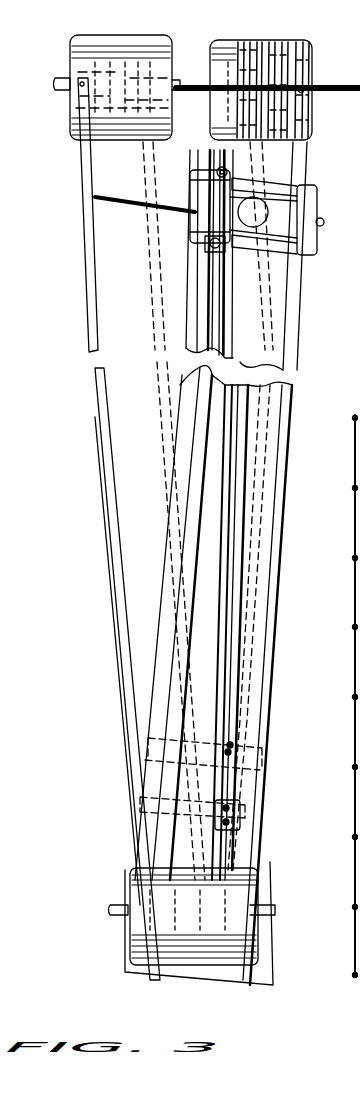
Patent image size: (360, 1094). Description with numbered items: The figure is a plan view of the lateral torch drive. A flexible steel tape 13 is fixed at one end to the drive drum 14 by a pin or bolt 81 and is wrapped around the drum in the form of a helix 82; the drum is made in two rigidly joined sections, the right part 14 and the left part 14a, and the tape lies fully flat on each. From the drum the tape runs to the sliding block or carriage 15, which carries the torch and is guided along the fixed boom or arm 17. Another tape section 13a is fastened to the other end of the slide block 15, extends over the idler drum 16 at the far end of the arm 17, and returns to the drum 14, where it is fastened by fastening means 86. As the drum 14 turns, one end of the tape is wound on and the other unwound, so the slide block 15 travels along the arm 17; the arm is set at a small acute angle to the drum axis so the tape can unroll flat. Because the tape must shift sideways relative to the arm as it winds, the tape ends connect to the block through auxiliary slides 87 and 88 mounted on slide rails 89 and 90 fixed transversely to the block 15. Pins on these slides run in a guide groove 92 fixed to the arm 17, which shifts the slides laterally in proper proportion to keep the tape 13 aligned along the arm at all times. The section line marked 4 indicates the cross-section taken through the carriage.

The left drum section 14a is at (90, 38).
The drive drum pulley 14 is at (213, 40).
The helix 82 is at (262, 44).
The fastening means 86 is at (80, 82).
The pin or bolt 81 is at (303, 90).
The flexible steel tape 13 is at (208, 150).
The auxiliary slide 87 is at (228, 170).
The slide rail 89 is at (292, 183).
The carriage or sliding block 15 is at (320, 203).
The section line 4- 4 is at (205, 262).
The auxiliary slide 88 is at (222, 252).
The slide rail 90 is at (264, 256).
The tape section 13a is at (214, 343).
The fixed boom or arm 17 is at (288, 396).
The guide groove 92 is at (243, 518).
The idler drum pulley 16 is at (262, 878).